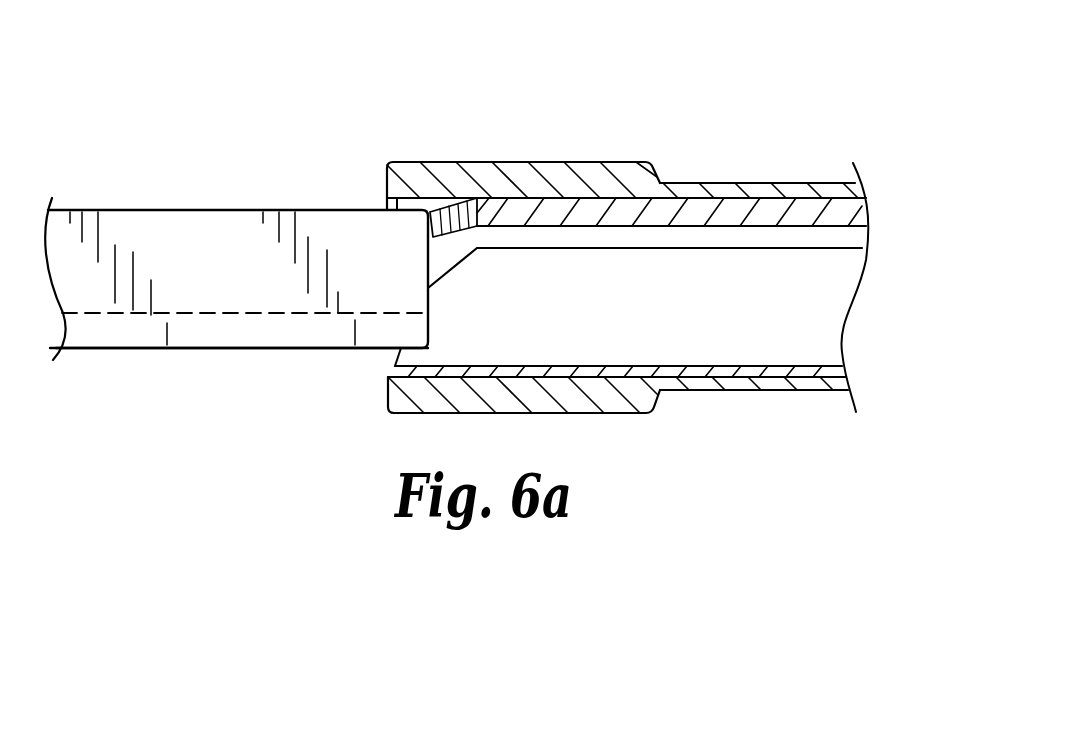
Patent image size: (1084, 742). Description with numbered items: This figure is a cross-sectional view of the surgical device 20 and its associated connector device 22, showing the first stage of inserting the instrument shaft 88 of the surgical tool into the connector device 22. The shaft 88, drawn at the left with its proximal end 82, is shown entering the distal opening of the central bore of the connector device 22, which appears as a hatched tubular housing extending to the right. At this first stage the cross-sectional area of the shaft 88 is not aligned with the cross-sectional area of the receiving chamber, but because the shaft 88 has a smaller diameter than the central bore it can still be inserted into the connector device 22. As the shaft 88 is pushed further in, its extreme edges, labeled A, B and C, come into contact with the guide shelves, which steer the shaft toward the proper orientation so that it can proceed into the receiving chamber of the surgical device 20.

The surgical device 20 is at (740, 119).
The connector device 22 is at (484, 161).
The proximal end 82 is at (153, 349).
The shaft 88 is at (134, 170).